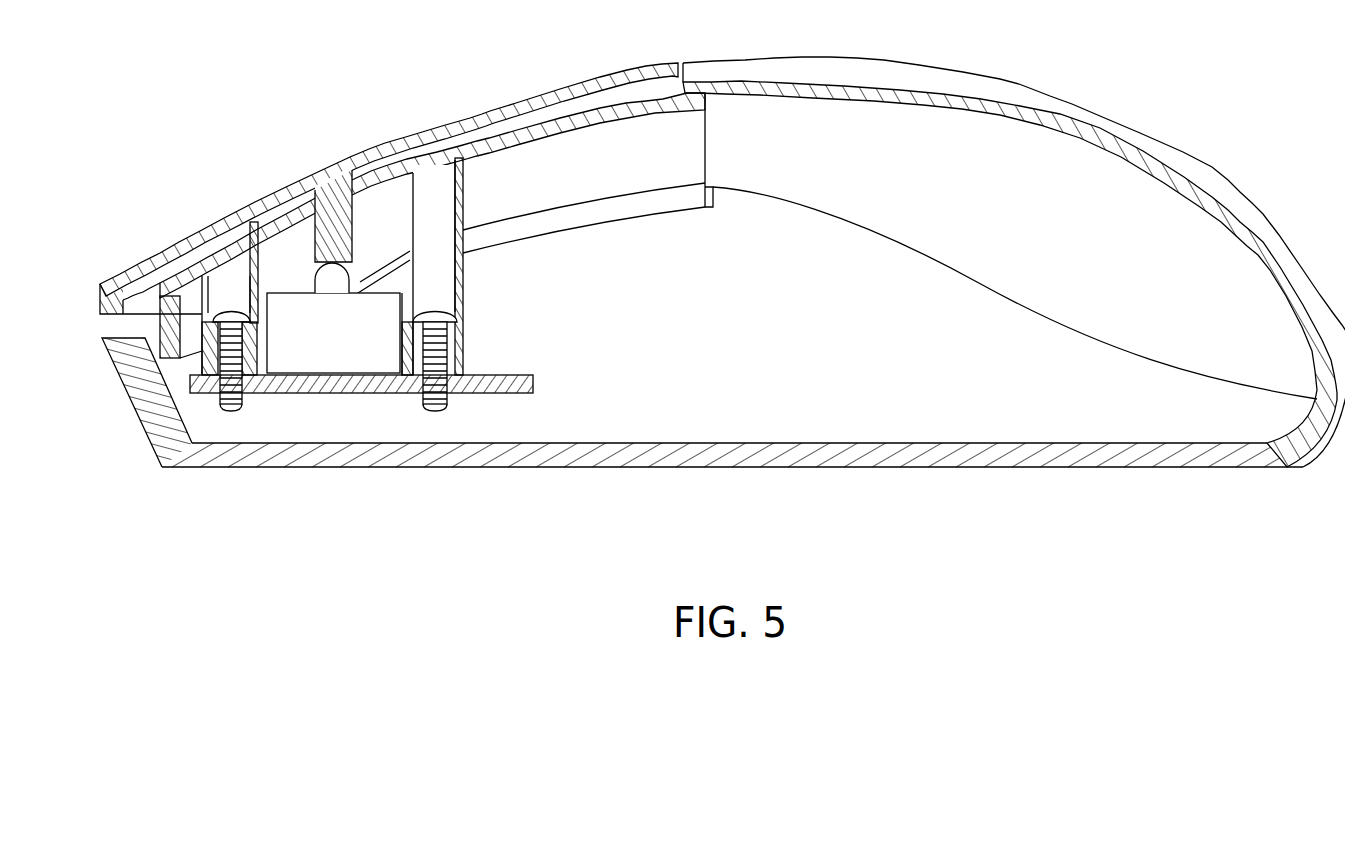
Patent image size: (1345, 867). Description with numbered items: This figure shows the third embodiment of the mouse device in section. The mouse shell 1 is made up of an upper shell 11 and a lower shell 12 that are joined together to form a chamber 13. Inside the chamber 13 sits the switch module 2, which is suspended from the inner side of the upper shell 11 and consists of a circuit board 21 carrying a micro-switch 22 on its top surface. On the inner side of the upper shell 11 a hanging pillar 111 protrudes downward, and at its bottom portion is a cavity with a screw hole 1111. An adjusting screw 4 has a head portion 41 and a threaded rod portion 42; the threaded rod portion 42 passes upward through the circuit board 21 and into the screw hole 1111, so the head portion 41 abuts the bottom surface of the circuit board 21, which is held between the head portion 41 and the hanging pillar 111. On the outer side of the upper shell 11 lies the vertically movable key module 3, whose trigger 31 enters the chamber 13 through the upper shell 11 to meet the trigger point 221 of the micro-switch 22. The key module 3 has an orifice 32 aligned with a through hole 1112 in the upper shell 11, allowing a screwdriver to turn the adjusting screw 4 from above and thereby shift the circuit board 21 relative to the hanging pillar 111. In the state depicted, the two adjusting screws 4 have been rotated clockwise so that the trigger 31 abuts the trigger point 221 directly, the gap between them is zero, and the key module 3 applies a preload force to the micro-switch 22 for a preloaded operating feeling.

The mouse shell 1 is at (723, 316).
The upper shell 11 is at (630, 112).
The lower shell 12 is at (772, 455).
The chamber 13 is at (826, 375).
The hanging pillar 111 is at (460, 262).
The screw hole 1111 is at (445, 360).
The through hole 1112 is at (438, 212).
The switch module 2 is at (361, 350).
The circuit board 21 is at (383, 387).
The micro-switch 22 is at (305, 329).
The trigger point 221 is at (330, 280).
The key module 3 is at (393, 149).
The trigger 31 is at (330, 253).
The orifice 32 is at (229, 228).
The adjusting screw 4 is at (498, 339).
The head portion 41 is at (436, 382).
The threaded rod portion 42 is at (443, 312).